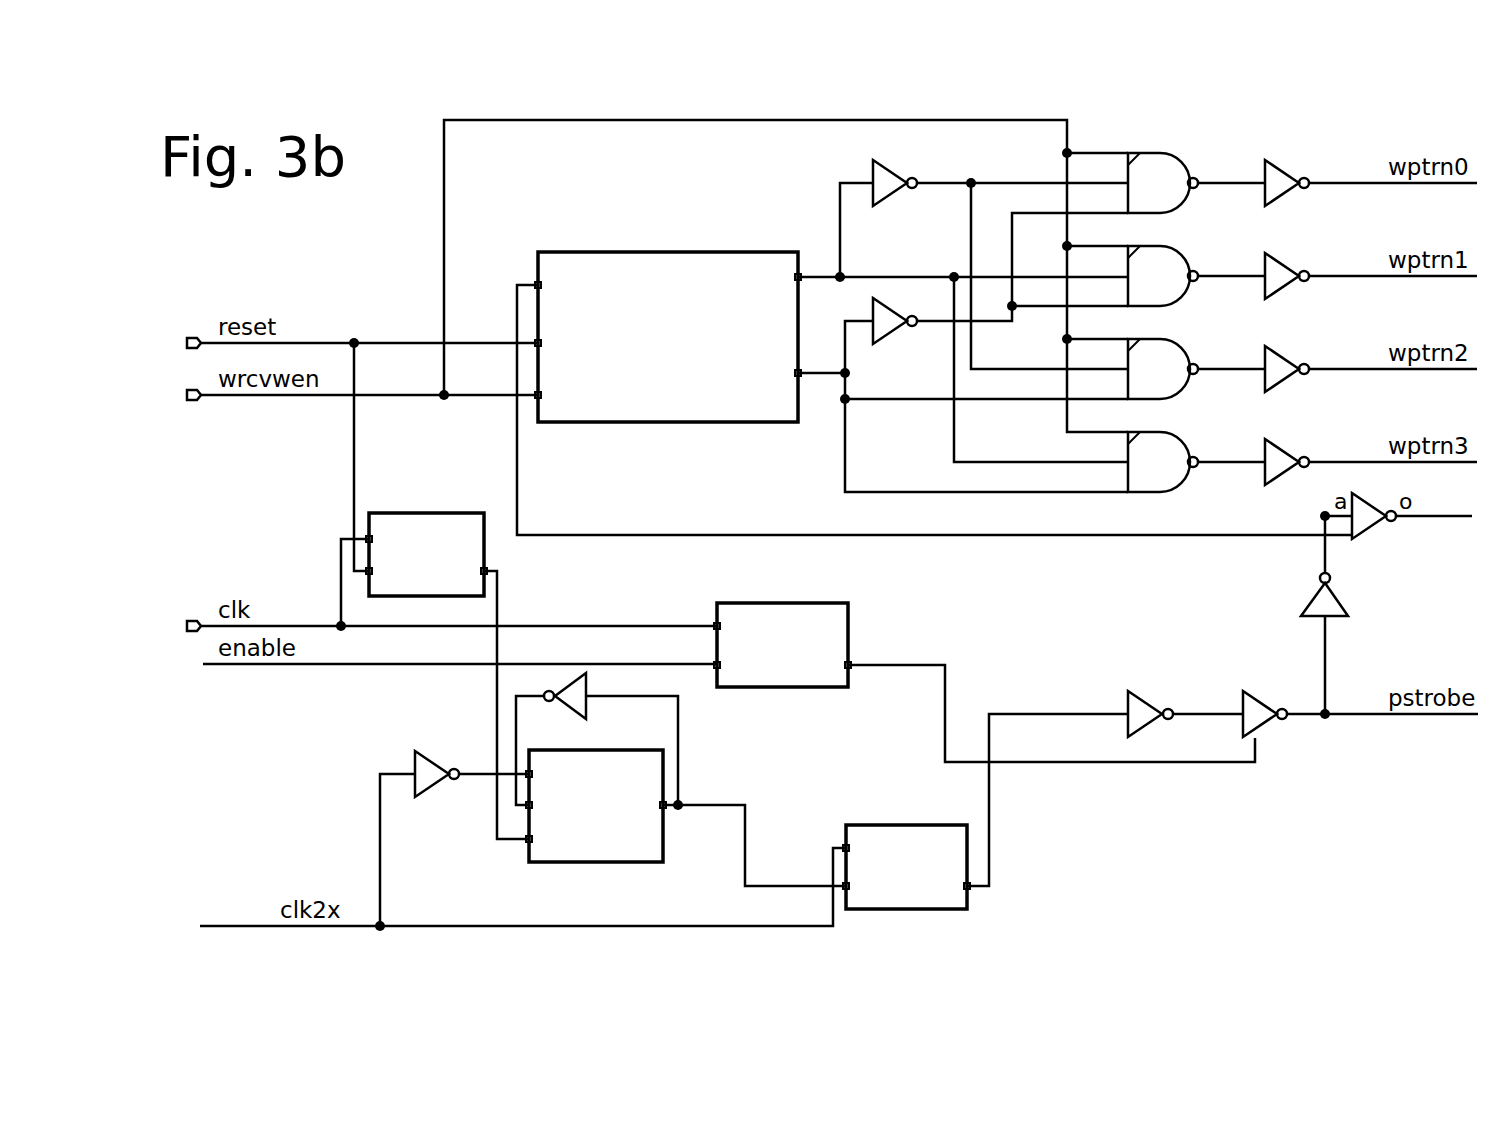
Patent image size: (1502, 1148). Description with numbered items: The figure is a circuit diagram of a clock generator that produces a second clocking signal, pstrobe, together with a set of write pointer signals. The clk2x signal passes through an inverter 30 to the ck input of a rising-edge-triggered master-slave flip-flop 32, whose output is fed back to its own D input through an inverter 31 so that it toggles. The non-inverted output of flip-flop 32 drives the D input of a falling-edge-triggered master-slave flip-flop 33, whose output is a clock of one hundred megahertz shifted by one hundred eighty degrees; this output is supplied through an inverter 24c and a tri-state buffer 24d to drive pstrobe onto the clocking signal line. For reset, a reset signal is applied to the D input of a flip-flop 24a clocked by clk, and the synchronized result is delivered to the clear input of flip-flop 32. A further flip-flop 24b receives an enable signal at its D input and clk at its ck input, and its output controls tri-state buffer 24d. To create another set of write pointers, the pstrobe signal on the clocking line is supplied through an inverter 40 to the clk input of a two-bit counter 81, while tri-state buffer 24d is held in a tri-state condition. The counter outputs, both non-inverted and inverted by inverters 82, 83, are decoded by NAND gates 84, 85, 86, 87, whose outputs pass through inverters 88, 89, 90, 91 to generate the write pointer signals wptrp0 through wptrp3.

The two-bit counter 81 is at (668, 252).
The inverter 82 is at (893, 196).
The inverter 83 is at (893, 334).
The NAND gate 84 is at (1165, 154).
The NAND gate 85 is at (1165, 247).
The NAND gate 86 is at (1165, 340).
The NAND gate 87 is at (1165, 433).
The inverter 88 is at (1286, 169).
The inverter 89 is at (1286, 262).
The inverter 90 is at (1286, 355).
The inverter 91 is at (1286, 448).
The flip-flop 24a is at (440, 513).
The flip-flop 24b is at (783, 687).
The inverter 24c is at (1148, 691).
The tri-state buffer 24d is at (1262, 691).
The inverter 30 is at (430, 752).
The inverter 31 is at (584, 714).
The rising-edge-triggered master-slave flip-flop 32 is at (588, 862).
The falling-edge-triggered master-slave flip-flop 33 is at (905, 825).
The inverter 40 is at (1310, 600).